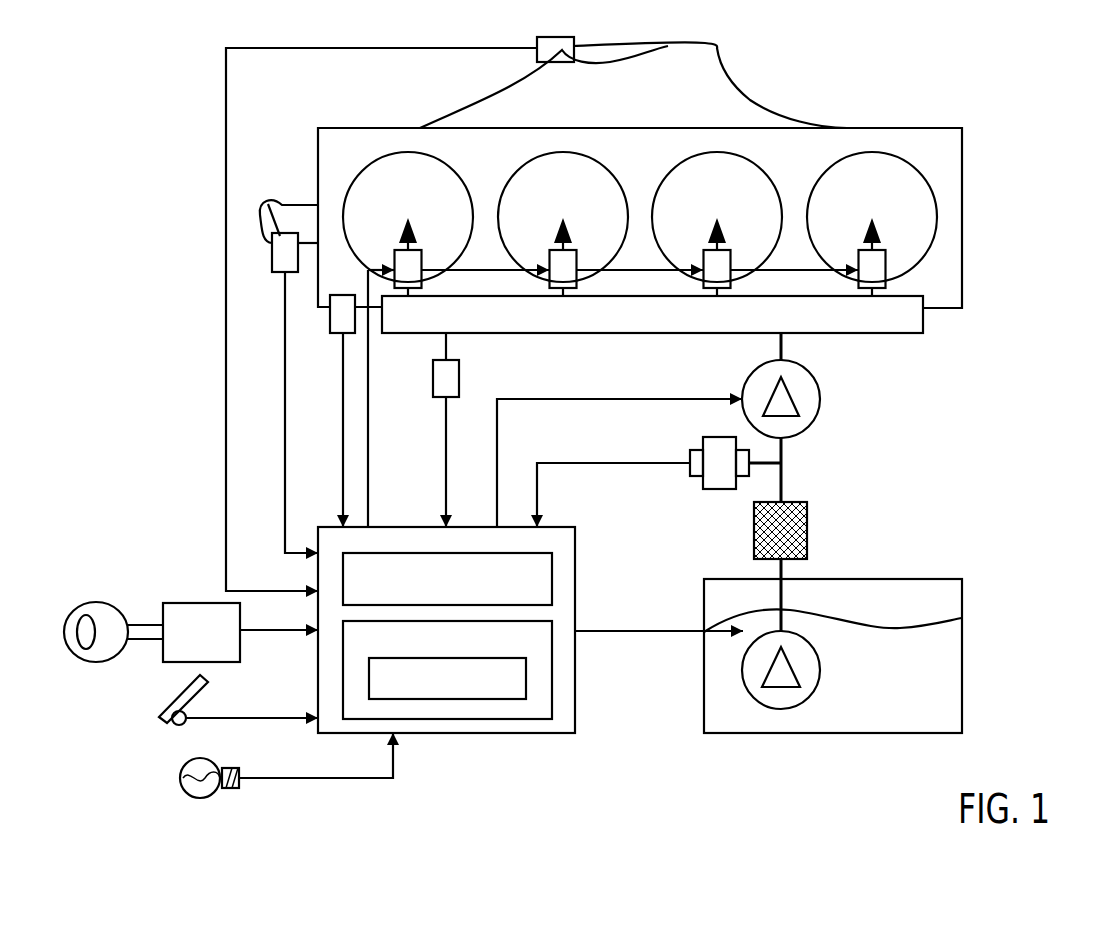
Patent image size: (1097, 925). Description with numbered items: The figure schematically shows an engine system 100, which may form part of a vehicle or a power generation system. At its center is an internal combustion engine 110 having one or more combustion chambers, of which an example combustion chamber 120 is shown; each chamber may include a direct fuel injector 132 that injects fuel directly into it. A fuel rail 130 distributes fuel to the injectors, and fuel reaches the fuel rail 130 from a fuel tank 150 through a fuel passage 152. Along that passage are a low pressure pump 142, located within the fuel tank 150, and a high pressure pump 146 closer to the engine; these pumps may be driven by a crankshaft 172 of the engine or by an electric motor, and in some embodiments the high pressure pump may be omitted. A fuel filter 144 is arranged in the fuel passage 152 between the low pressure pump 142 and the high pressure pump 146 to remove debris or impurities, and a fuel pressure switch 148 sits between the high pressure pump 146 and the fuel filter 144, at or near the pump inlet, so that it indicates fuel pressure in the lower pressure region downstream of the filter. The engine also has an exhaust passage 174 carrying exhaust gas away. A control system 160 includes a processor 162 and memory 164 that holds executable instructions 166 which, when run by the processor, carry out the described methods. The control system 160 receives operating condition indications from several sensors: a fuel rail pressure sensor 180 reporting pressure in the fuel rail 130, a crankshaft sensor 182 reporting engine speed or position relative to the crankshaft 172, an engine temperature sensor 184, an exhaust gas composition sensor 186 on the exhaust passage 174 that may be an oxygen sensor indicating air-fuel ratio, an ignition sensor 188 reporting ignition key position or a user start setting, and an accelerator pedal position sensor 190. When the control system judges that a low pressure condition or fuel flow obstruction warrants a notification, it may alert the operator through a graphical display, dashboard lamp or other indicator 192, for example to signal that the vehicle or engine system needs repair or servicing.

The engine system 100 is at (867, 78).
The internal combustion engine 110 is at (907, 142).
The combustion chamber 120 is at (393, 202).
The fuel rail 130 is at (577, 325).
The direct fuel injector 132 is at (404, 262).
The low pressure pump 142 is at (821, 670).
The fuel filter 144 is at (808, 531).
The high pressure pump 146 is at (822, 397).
The fuel pressure switch 148 is at (700, 437).
The fuel tank 150 is at (963, 688).
The fuel passage 152 is at (784, 480).
The control system 160 is at (577, 653).
The processor 162 is at (431, 591).
The memory 164 is at (431, 654).
The executable instructions 166 is at (431, 690).
The crankshaft 172 is at (285, 208).
The exhaust passage 174 is at (743, 108).
The fuel rail pressure sensor 180 is at (442, 392).
The crankshaft sensor 182 is at (279, 272).
The engine temperature sensor 184 is at (338, 325).
The exhaust gas composition sensor 186 is at (545, 56).
The ignition sensor 188 is at (185, 642).
The accelerator pedal position sensor 190 is at (163, 712).
The indicator 192 is at (180, 768).